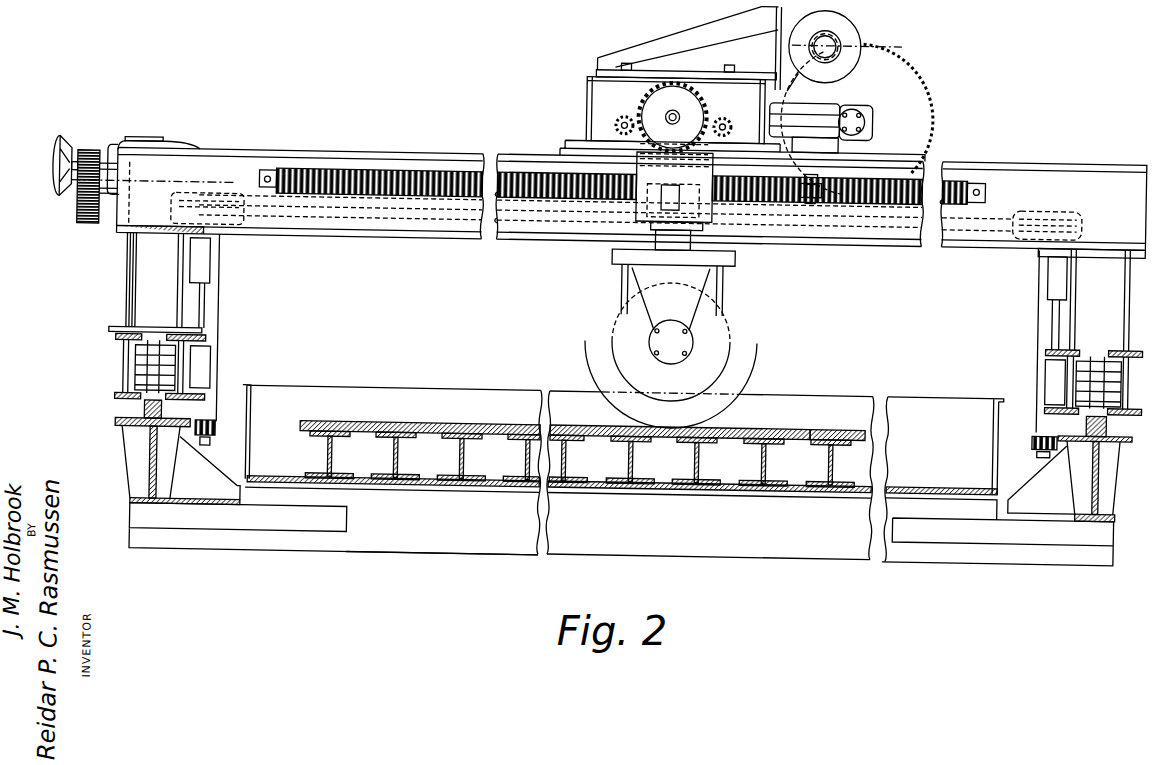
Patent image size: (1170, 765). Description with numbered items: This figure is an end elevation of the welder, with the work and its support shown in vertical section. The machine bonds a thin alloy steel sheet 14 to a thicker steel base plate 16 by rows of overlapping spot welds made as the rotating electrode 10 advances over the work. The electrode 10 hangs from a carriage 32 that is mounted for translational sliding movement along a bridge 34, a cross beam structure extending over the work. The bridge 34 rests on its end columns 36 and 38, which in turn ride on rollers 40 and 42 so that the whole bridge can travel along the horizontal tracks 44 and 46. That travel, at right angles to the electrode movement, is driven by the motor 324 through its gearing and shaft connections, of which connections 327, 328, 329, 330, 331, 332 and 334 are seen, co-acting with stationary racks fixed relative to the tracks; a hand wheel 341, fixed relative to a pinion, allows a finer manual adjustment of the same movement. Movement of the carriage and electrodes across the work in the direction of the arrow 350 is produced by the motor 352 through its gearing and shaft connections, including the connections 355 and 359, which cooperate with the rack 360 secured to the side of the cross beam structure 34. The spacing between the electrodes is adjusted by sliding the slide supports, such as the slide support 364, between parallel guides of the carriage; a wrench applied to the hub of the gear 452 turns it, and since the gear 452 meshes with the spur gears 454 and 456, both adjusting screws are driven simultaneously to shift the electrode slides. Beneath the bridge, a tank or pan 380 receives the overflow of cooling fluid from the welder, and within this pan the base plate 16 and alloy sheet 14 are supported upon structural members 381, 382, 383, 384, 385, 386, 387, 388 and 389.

The electrode 10 is at (743, 338).
The alloy steel sheet 14 is at (773, 416).
The steel base plate 16 is at (820, 423).
The carriage 32 is at (637, 196).
The bridge 34 is at (418, 228).
The end column 36 is at (140, 306).
The end column 38 is at (1112, 295).
The roller 40 is at (153, 367).
The roller 42 is at (1093, 365).
The horizontal track 44 is at (150, 422).
The horizontal track 46 is at (1110, 408).
The motor 324 is at (140, 137).
The gearing and shaft connection 327 is at (130, 192).
The gearing and shaft connection 328 is at (230, 177).
The gearing and shaft connection 329 is at (210, 297).
The gearing and shaft connection 330 is at (222, 429).
The gearing and shaft connection 331 is at (872, 215).
The gearing and shaft connection 332 is at (1017, 222).
The gearing and shaft connection 334 is at (1043, 296).
The hand wheel 341 is at (59, 140).
The arrow 350 is at (565, 404).
The motor 352 is at (848, 21).
The gearing and shaft connection 355 is at (915, 65).
The gearing and shaft connection 359 is at (808, 174).
The rack 360 is at (590, 180).
The slide support 364 is at (867, 45).
The tank or pan 380 is at (992, 430).
The structural member 381 is at (339, 459).
The structural member 382 is at (403, 458).
The structural member 383 is at (469, 457).
The structural member 384 is at (531, 455).
The structural member 385 is at (571, 458).
The structural member 386 is at (638, 455).
The structural member 387 is at (704, 454).
The structural member 388 is at (771, 454).
The structural member 389 is at (838, 453).
The gear 452 is at (675, 81).
The spur gear 454 is at (615, 115).
The spur gear 456 is at (723, 113).